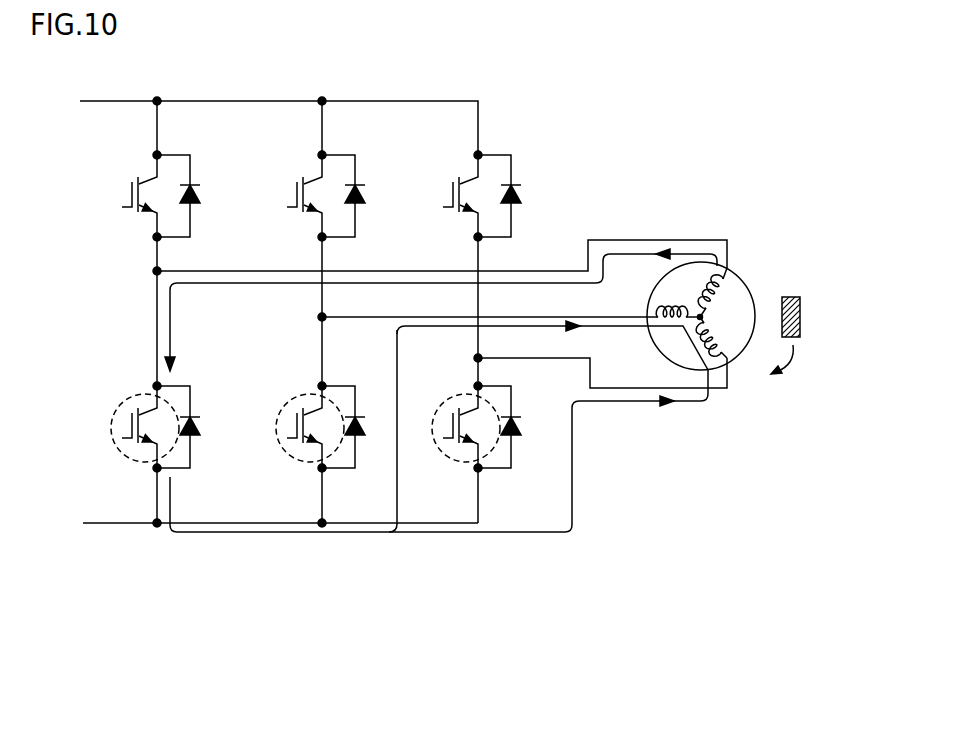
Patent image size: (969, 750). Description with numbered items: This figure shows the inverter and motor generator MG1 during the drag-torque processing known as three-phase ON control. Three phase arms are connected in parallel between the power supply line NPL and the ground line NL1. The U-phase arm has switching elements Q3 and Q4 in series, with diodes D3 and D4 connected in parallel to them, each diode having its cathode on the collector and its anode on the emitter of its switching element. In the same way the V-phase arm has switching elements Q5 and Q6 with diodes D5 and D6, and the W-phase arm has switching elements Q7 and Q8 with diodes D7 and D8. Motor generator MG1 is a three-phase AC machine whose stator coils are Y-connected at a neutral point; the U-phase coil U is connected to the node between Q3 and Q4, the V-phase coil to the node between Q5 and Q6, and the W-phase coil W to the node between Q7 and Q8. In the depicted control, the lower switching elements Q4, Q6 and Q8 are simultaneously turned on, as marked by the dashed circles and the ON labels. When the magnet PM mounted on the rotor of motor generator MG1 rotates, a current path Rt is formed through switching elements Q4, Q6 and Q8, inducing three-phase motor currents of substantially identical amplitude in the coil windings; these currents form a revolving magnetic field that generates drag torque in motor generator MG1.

The positive electrode line NPL is at (107, 101).
The ground line NL1 is at (106, 526).
The switching element Q3 is at (150, 176).
The switching element Q4 is at (151, 406).
The switching element Q5 is at (315, 176).
The switching element Q6 is at (316, 406).
The switching element Q7 is at (471, 176).
The switching element Q8 is at (472, 406).
The diode D3 is at (191, 196).
The diode D4 is at (191, 427).
The diode D5 is at (356, 196).
The diode D6 is at (357, 427).
The diode D7 is at (511, 196).
The diode D8 is at (512, 427).
The motor generator MG1 is at (713, 302).
The U-phase coil U is at (718, 292).
The W-phase coil W is at (719, 337).
The magnet PM is at (792, 297).
The current path Rt is at (633, 254).
The three-phase ON control ON is at (139, 463).